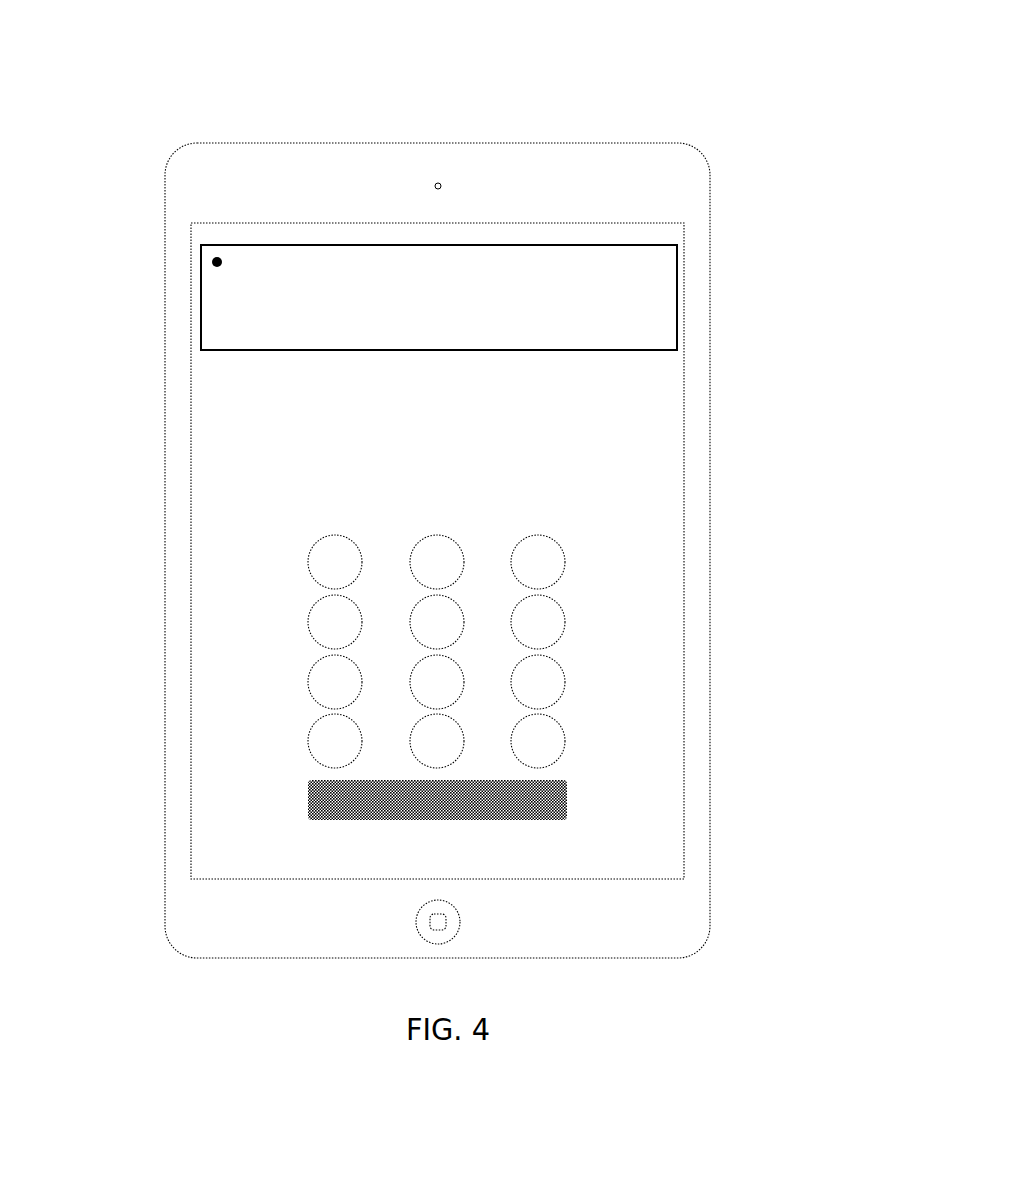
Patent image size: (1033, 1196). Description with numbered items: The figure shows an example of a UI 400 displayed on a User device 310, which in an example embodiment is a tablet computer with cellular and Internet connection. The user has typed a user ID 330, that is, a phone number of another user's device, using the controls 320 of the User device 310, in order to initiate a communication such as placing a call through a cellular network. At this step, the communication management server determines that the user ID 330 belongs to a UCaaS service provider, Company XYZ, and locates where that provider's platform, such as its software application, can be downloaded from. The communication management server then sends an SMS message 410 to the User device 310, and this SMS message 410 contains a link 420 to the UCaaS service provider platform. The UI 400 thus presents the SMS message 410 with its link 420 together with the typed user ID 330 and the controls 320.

The UI 400 is at (197, 72).
The User device 310 is at (716, 215).
The SMS message 410 is at (679, 290).
The link 420 is at (234, 302).
The user ID 330 is at (569, 416).
The controls 320 is at (569, 542).